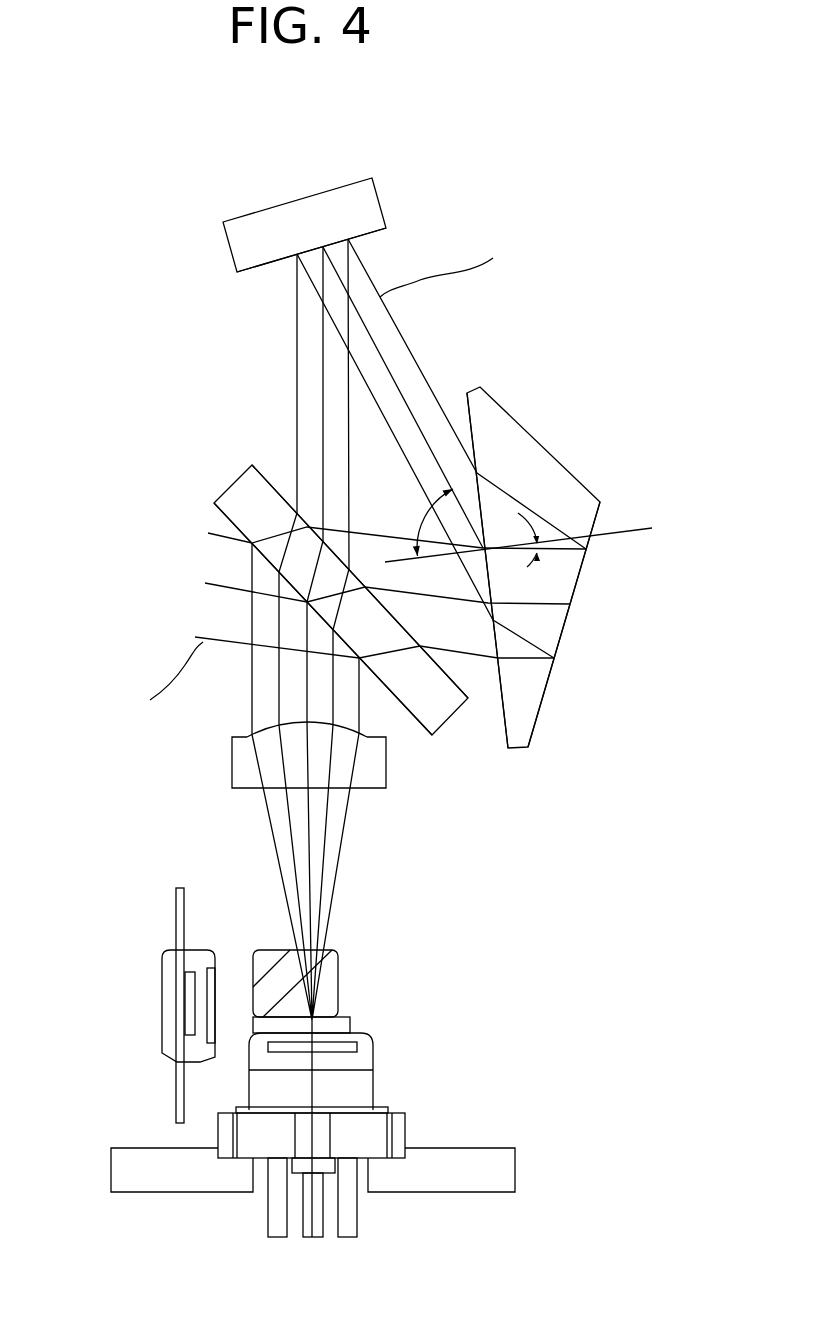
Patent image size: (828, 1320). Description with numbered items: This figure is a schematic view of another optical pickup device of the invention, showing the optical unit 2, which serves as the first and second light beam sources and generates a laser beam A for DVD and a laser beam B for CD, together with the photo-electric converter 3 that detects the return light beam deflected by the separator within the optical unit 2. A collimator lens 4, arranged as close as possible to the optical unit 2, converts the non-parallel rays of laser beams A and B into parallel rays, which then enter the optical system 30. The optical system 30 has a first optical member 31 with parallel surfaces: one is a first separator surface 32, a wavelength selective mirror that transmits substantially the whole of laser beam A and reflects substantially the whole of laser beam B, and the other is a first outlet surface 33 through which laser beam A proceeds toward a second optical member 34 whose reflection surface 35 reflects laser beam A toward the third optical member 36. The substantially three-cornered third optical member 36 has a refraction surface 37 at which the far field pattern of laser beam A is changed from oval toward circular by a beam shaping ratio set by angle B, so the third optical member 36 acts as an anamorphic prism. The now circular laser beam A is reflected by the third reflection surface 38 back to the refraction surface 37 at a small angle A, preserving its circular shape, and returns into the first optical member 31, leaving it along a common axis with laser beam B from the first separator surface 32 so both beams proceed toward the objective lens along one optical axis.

The optical system 30 is at (428, 175).
The mirror 34 is at (227, 243).
The reflection surface 35 is at (270, 263).
The first optical member 31 is at (233, 483).
The first separator surface 32 is at (223, 513).
The first outlet surface 33 is at (278, 488).
The third optical member 36 is at (547, 447).
The refraction surface 37 is at (474, 433).
The third reflection surface 38 is at (597, 522).
The collimator lens 4 is at (245, 787).
The photo-electric converter 3 is at (170, 1034).
The optical unit 2 is at (358, 1092).